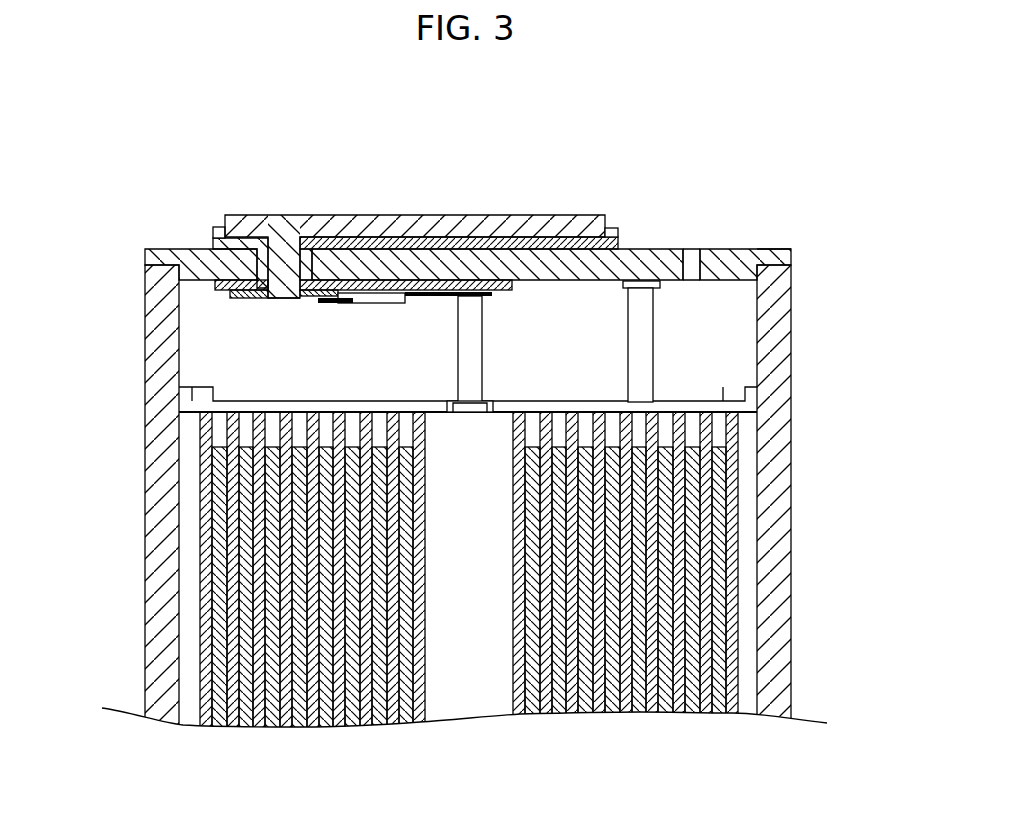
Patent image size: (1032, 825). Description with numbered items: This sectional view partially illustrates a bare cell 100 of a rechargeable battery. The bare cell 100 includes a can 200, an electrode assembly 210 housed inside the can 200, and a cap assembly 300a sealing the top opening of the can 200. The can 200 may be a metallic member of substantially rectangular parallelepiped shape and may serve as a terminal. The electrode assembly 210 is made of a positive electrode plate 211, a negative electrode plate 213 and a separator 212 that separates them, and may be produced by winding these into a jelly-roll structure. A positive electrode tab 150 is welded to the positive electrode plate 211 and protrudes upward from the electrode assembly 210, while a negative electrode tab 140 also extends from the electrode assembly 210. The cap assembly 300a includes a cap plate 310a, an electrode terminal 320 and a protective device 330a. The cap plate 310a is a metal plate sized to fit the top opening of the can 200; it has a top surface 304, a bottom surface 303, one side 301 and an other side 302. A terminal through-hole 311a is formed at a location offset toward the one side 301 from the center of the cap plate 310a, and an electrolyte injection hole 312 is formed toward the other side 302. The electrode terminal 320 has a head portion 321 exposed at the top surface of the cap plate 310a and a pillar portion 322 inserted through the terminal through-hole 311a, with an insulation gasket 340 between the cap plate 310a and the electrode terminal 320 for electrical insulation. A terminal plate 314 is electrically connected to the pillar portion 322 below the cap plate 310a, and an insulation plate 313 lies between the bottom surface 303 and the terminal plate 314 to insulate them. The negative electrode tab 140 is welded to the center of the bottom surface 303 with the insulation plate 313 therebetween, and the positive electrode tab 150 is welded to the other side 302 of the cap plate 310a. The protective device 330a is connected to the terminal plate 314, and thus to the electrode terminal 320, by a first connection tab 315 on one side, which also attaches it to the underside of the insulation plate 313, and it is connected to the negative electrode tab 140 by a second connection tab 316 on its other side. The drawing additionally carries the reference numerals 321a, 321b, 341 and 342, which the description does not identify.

The bare cell 100 is at (70, 122).
The negative electrode tab 140 is at (470, 318).
The positive electrode tab 150 is at (643, 327).
The can 200 is at (781, 589).
The electrode assembly 210 is at (745, 500).
The positive electrode plate 211 is at (715, 705).
The separator 212 is at (730, 705).
The negative electrode plate 213 is at (692, 707).
The cap assembly 300a is at (772, 249).
The one side 301 is at (147, 255).
The other side 302 is at (792, 257).
The bottom surface 303 is at (572, 281).
The top surface 304 is at (668, 249).
The cap plate 310a is at (545, 252).
The terminal through-hole 311a is at (252, 270).
The electrolyte injection hole 312 is at (697, 268).
The insulation plate 313 is at (232, 282).
The terminal plate 314 is at (240, 298).
The first connection tab 315 is at (332, 297).
The second connection tab 316 is at (430, 297).
The electrode terminal 320 is at (298, 214).
The head portion 321 is at (420, 225).
The first end of connecting plate 321a is at (223, 217).
The second end of connecting plate 321b is at (612, 236).
The pillar portion 322 is at (275, 297).
The protective device 330a is at (381, 303).
The insulation gasket 340 is at (310, 267).
The first insulating member 341 is at (212, 236).
The second insulating member 342 is at (633, 246).